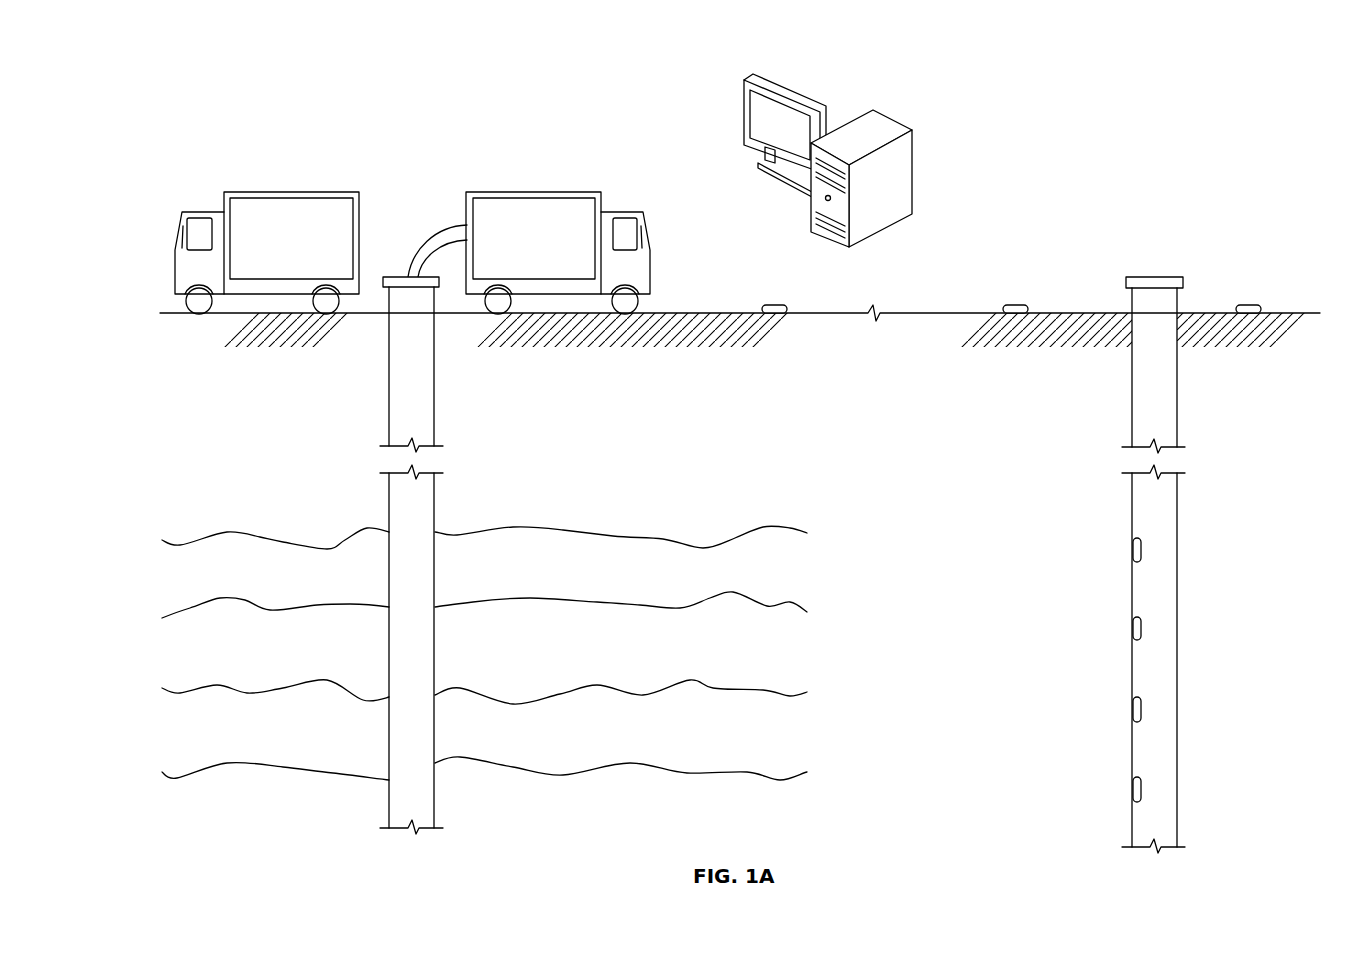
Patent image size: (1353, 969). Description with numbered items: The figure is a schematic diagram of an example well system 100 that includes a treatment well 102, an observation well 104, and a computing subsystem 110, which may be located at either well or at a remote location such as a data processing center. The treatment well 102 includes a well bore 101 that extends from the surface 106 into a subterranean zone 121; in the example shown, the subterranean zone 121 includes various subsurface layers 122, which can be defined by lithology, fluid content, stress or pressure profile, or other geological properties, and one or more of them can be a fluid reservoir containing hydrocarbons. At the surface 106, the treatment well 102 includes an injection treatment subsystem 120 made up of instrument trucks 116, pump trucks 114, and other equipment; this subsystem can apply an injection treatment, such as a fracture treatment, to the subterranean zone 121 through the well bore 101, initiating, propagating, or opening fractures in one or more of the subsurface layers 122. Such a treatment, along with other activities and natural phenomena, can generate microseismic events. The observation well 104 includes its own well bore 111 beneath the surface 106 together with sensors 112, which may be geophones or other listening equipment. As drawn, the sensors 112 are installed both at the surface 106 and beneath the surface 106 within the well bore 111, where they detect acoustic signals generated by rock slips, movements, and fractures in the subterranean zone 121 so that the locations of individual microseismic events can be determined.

The well system 100 is at (247, 82).
The well bore 101 is at (407, 410).
The treatment well 102 is at (358, 120).
The observation well 104 is at (1158, 162).
The surface 106 is at (928, 312).
The computing subsystem 110 is at (892, 117).
The well bore 111 is at (1158, 412).
The sensors 112 is at (775, 305).
The pump trucks 114 is at (558, 249).
The instrument trucks 116 is at (308, 249).
The injection treatment subsystem 120 is at (428, 137).
The subterranean zone 121 is at (818, 482).
The subsurface layers 122 is at (623, 582).